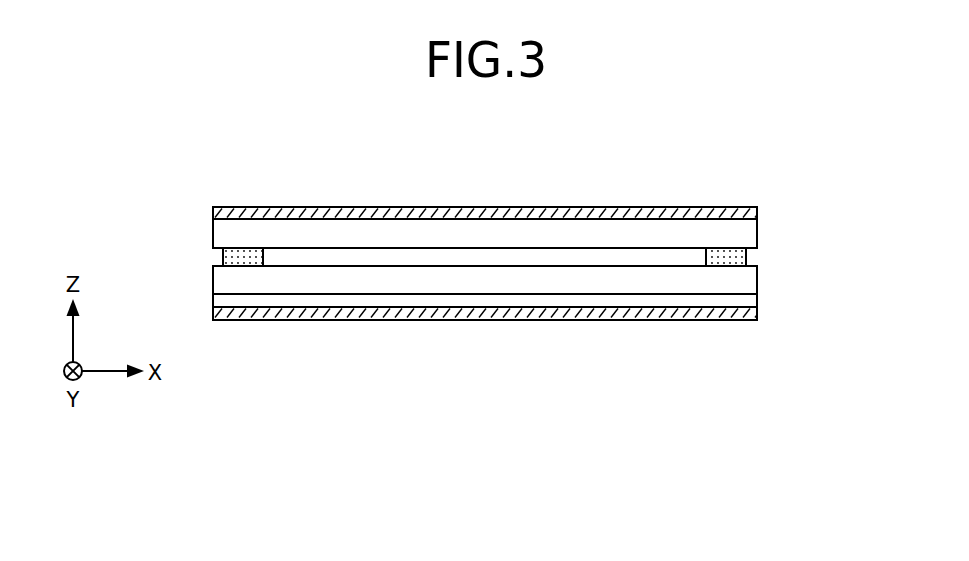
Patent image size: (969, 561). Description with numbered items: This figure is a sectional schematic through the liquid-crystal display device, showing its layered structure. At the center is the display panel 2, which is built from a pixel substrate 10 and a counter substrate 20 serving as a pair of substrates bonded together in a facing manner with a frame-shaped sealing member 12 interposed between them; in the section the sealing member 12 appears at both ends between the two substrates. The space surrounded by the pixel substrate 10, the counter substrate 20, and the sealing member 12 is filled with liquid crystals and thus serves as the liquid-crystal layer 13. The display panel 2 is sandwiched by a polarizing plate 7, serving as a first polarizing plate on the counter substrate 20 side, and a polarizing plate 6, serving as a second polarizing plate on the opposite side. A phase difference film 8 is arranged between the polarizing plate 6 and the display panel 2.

The display panel 2 is at (545, 225).
The polarizing plate 6 is at (752, 313).
The polarizing plate 7 is at (752, 214).
The phase difference film 8 is at (750, 300).
The pixel substrate 10 is at (748, 282).
The sealing member 12 is at (239, 256).
The liquid-crystal layer 13 is at (482, 257).
The counter substrate 20 is at (748, 235).